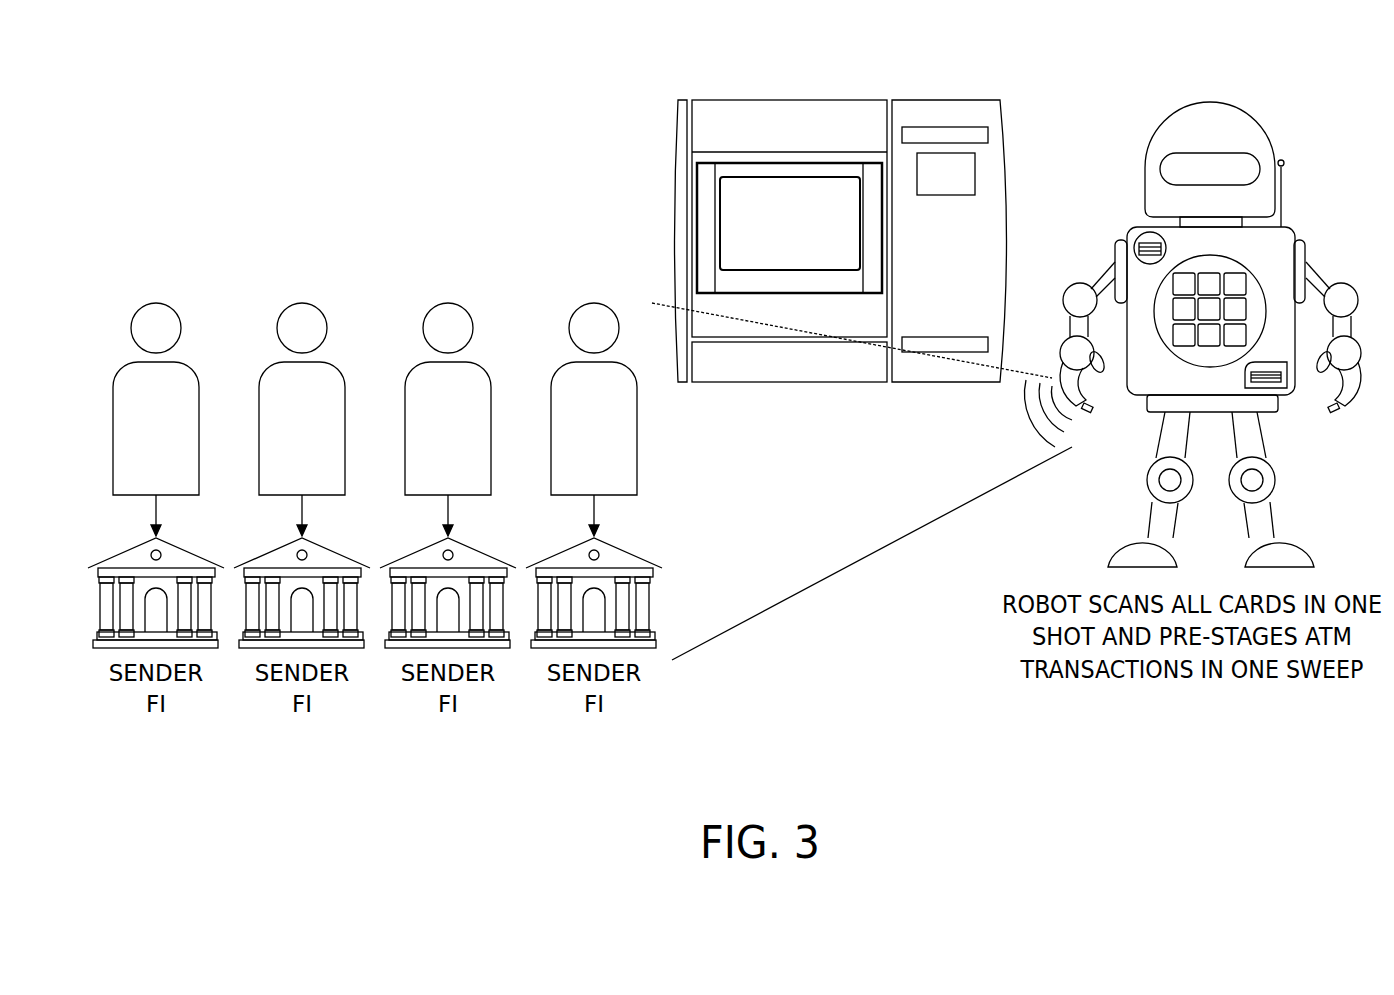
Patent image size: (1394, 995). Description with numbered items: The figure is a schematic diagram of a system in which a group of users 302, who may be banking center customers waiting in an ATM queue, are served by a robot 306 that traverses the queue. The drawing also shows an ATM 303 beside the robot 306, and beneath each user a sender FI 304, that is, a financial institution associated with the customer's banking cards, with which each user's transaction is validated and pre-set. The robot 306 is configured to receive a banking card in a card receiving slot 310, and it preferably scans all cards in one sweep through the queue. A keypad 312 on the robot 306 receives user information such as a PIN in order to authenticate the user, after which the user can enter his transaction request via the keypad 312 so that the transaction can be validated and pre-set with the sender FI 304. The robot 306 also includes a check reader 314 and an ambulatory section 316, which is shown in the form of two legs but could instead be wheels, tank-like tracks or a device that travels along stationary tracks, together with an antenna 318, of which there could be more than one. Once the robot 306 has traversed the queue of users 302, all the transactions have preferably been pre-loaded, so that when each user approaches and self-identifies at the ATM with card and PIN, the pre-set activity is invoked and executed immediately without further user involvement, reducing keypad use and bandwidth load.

The group of users 302 is at (635, 300).
The ATM 303 is at (851, 100).
The sender FI 304 is at (92, 712).
The robot 306 is at (1210, 103).
The card receiving slot 310 is at (1135, 251).
The keypad 312 is at (1246, 283).
The check reader 314 is at (1288, 381).
The ambulatory section 316 is at (1140, 416).
The antenna 318 is at (1283, 195).